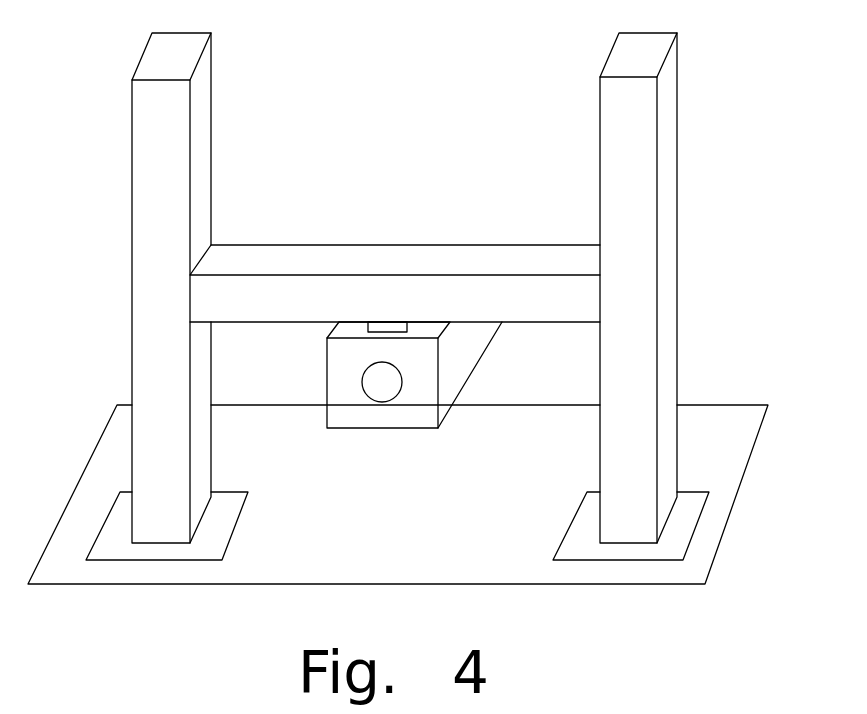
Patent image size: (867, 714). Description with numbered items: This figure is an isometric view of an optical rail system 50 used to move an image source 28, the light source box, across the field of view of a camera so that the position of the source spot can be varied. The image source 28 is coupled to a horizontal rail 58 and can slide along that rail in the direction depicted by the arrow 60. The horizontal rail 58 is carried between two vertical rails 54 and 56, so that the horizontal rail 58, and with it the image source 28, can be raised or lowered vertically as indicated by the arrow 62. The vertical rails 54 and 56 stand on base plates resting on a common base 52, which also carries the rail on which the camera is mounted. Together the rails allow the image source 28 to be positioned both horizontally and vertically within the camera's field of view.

The optical rail system 50 is at (744, 91).
The common base 52 is at (485, 557).
The vertical rail 54 is at (620, 108).
The vertical rail 56 is at (155, 108).
The horizontal rail 58 is at (547, 290).
The image source 28 is at (478, 383).
The arrow 60 is at (328, 217).
The arrow 62 is at (237, 185).